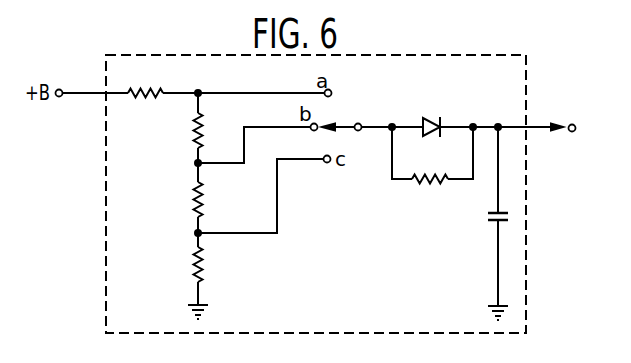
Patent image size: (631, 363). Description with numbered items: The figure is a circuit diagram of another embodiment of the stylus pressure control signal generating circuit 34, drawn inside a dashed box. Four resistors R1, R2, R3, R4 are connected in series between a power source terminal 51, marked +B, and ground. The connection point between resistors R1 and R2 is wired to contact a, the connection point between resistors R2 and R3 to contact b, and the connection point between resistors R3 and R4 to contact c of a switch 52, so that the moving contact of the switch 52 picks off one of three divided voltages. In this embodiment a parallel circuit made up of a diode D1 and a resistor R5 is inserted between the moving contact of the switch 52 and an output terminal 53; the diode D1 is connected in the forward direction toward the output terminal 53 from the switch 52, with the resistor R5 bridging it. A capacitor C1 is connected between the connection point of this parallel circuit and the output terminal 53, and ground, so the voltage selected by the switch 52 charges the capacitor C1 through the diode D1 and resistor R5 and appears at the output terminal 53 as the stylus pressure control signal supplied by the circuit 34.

The power source terminal 51 is at (60, 89).
The switch 52 is at (343, 124).
The output terminal 53 is at (570, 123).
The stylus pressure control signal generating circuit 34 is at (527, 149).
The resistor R1 is at (145, 81).
The resistor R2 is at (184, 130).
The resistor R3 is at (184, 199).
The resistor R4 is at (184, 264).
The resistor R5 is at (432, 165).
The diode D1 is at (435, 115).
The capacitor C1 is at (488, 216).